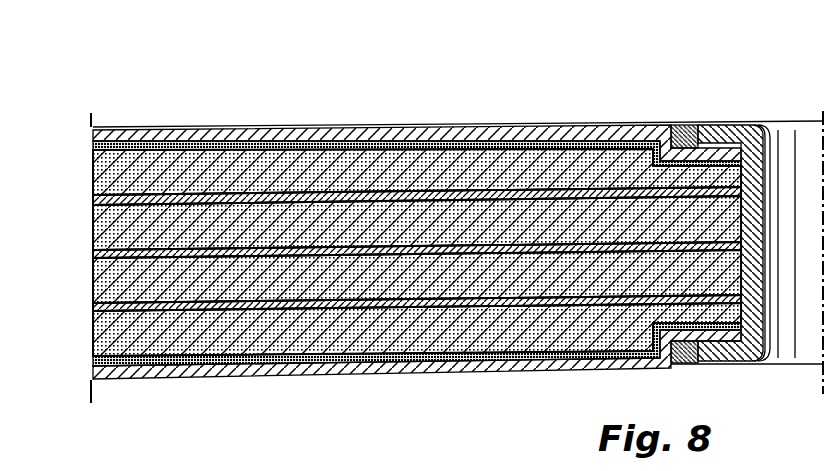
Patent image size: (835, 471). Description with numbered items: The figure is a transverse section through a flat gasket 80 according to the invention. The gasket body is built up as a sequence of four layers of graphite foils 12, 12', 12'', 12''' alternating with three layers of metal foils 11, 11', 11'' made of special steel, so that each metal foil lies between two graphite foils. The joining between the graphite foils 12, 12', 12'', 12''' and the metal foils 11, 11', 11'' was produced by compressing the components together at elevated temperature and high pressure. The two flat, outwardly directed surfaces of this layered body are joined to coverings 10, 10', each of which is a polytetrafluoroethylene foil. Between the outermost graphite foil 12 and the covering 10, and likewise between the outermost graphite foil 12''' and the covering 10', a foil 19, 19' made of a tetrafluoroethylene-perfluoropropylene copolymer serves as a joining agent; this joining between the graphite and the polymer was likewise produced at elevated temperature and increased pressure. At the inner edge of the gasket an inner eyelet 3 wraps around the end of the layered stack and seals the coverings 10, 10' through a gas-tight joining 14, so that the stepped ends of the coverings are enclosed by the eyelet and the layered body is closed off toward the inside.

The flat gasket 80 is at (283, 101).
The covering 10 is at (417, 112).
The foil 19 is at (417, 115).
The graphite foil 12 is at (384, 172).
The metal foil 11 is at (384, 195).
The graphite foil 12' is at (384, 223).
The metal foil 11' is at (384, 257).
The graphite foil 12'' is at (384, 277).
The metal foil 11'' is at (384, 314).
The graphite foil 12''' is at (384, 334).
The foil 19' is at (417, 378).
The covering 10' is at (417, 382).
The gas-tight joining 14 is at (684, 128).
The inner eyelet 3 is at (724, 135).